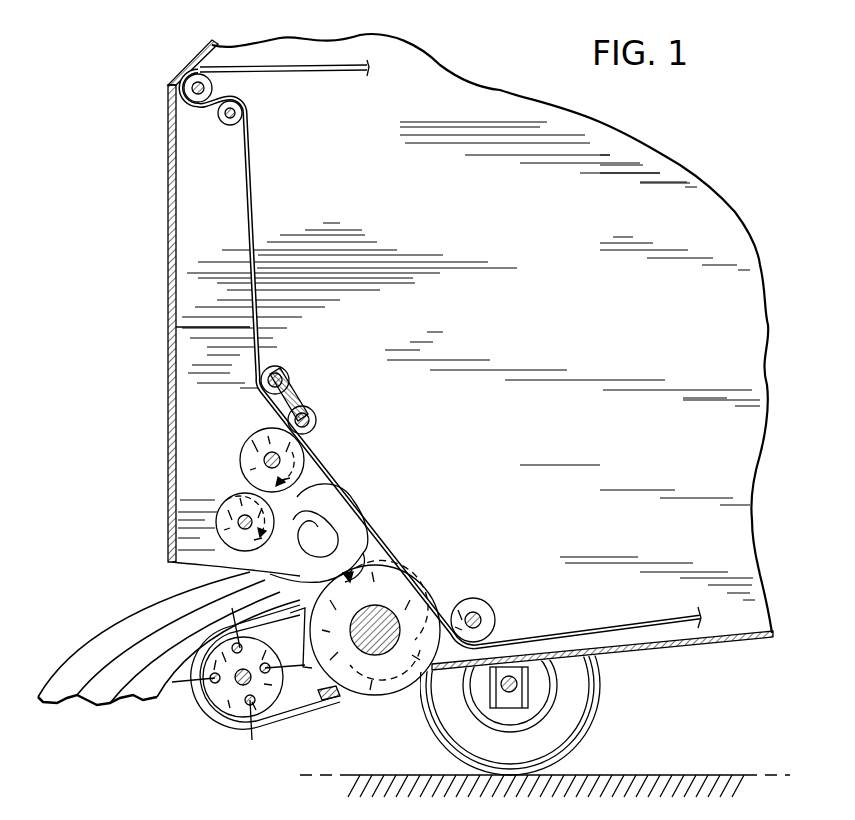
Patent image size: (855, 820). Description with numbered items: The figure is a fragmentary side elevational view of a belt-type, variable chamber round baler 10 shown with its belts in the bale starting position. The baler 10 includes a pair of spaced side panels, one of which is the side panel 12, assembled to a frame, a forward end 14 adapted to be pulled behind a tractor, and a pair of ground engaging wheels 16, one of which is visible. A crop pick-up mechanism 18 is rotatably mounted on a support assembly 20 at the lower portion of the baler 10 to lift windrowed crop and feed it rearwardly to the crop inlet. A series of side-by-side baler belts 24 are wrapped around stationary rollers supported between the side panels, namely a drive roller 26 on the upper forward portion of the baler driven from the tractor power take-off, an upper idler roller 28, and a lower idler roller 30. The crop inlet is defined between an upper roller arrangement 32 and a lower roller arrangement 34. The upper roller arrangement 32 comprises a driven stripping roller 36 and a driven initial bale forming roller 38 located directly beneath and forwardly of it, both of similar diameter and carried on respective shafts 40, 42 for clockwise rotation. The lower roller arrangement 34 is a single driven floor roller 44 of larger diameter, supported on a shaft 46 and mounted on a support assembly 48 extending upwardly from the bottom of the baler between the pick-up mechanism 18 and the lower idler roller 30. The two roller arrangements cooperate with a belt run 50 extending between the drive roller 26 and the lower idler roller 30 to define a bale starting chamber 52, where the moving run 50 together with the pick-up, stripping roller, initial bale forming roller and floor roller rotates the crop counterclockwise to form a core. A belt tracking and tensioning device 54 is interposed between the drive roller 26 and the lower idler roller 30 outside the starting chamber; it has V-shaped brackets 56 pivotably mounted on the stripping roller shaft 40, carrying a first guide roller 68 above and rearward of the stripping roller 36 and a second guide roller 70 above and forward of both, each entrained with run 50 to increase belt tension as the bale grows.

The baler 10 is at (505, 46).
The side panel 12 is at (410, 78).
The forward end 14 is at (168, 228).
The ground engaging wheel 16 is at (598, 714).
The crop pick-up mechanism 18 is at (218, 727).
The support assembly 20 is at (265, 735).
The baler belt 24 is at (298, 66).
The drive roller 26 is at (216, 92).
The upper idler roller 28 is at (223, 125).
The lower idler roller 30 is at (486, 612).
The upper roller arrangement 32 is at (230, 506).
The lower roller arrangement 34 is at (397, 708).
The stripping roller 36 is at (240, 450).
The initial bale forming roller 38 is at (222, 520).
The shaft 40 is at (285, 457).
The shaft 42 is at (245, 522).
The floor roller 44 is at (400, 585).
The shaft 46 is at (402, 630).
The support assembly 48 is at (340, 702).
The belt run 50 is at (358, 512).
The bale starting chamber 52 is at (417, 560).
The belt tracking and tensioning device 54 is at (268, 422).
The V-shaped bracket 56 is at (298, 402).
The first guide roller 68 is at (316, 417).
The second guide roller 70 is at (284, 372).